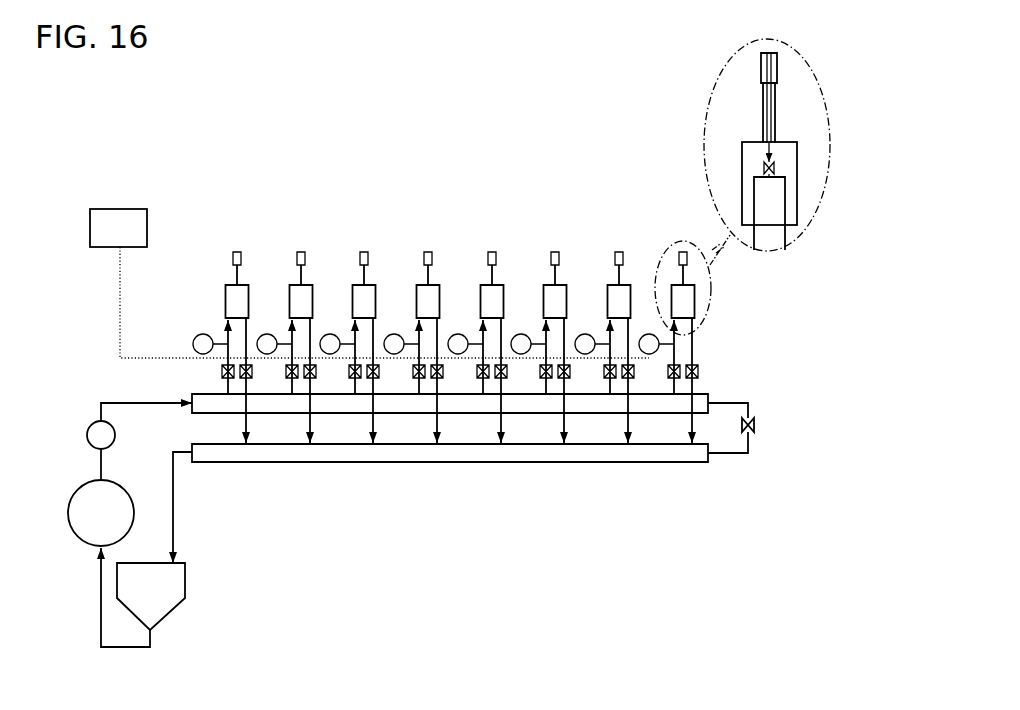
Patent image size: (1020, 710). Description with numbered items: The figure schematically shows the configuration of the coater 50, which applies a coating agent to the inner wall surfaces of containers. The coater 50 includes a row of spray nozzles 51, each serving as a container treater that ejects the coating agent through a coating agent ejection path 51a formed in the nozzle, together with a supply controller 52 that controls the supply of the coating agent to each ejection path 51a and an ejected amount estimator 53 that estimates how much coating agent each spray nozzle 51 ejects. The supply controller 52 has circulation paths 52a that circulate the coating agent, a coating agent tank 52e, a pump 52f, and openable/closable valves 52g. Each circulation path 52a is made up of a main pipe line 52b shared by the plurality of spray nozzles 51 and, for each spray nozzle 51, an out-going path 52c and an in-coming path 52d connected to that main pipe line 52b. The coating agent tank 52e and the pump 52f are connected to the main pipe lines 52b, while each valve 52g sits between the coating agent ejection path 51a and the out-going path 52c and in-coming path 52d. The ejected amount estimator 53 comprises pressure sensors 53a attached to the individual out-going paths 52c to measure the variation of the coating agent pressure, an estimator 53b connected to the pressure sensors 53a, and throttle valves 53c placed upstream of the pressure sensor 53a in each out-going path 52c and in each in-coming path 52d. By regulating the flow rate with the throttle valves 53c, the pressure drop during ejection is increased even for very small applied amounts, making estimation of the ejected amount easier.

The coater 50 is at (233, 150).
The spray nozzle 51 is at (232, 245).
The coating agent ejection path 51a is at (775, 118).
The supply controller 52 is at (485, 480).
The circulation path 52a is at (432, 531).
The main pipe line 52b is at (447, 463).
The out-going path 52c is at (354, 380).
The in-coming path 52d is at (372, 380).
The coating agent tank 52e is at (165, 592).
The pump 52f is at (124, 508).
The openable/closable valve 52g is at (778, 168).
The ejected amount estimator 53 is at (382, 258).
The pressure sensor 53a is at (262, 334).
The estimator 53b is at (117, 222).
The throttle valve 53c is at (545, 380).